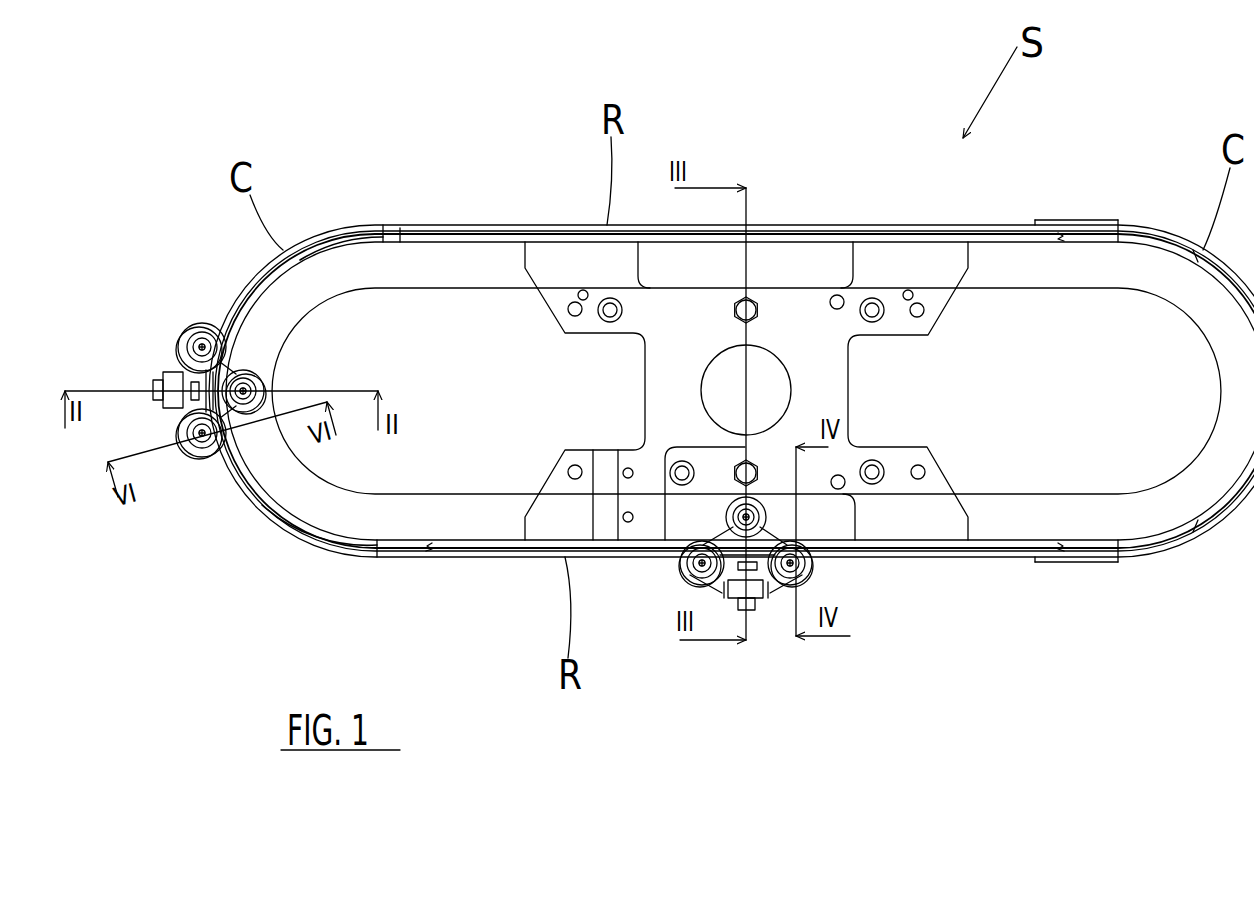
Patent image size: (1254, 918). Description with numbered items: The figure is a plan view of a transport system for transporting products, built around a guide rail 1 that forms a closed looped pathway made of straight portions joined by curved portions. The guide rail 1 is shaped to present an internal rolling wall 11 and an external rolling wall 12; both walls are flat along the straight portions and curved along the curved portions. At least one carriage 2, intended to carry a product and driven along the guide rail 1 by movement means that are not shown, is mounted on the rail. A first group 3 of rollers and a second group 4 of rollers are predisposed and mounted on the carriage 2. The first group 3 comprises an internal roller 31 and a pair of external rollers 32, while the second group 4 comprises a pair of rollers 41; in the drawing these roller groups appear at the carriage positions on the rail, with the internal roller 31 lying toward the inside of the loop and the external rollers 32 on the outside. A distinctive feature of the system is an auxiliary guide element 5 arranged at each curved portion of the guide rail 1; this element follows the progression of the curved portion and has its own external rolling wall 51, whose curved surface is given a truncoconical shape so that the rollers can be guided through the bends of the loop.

The guide rail 1 is at (972, 566).
The carriage 2 is at (777, 530).
The first group of rollers 3 is at (542, 531).
The second group of rollers 4 is at (725, 592).
The auxiliary guide element 5 is at (320, 527).
The internal rolling wall 11 is at (1007, 540).
The external rolling wall 12 is at (1015, 555).
The internal roller 31 is at (727, 527).
The external rollers 32 is at (690, 578).
The rollers 41 is at (687, 582).
The external rolling wall 51 is at (257, 508).